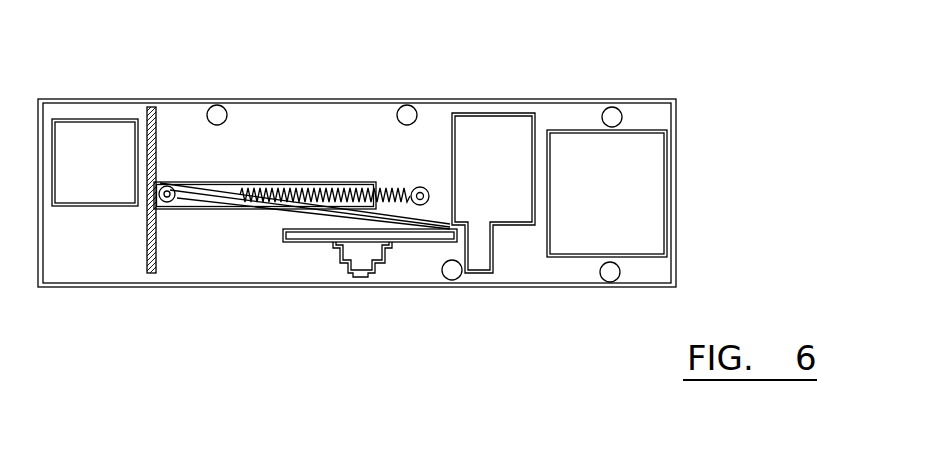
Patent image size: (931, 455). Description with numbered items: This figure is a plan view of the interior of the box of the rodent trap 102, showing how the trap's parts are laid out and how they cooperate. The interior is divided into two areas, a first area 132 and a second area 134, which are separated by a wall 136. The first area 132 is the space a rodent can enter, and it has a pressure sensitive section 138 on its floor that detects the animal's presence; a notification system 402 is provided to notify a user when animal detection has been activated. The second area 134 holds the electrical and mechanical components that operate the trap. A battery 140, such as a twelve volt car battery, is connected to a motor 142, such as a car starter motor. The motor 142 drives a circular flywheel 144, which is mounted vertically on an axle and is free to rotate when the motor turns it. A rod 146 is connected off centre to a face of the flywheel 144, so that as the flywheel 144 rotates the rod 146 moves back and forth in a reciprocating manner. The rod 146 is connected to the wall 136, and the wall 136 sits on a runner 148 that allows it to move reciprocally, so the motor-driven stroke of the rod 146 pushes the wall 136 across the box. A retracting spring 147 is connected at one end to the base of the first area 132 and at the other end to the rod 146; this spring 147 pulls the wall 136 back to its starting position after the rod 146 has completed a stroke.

The housing assembly 102 is at (690, 147).
The first area 132 is at (108, 253).
The second area 134 is at (236, 261).
The wall 136 is at (157, 258).
The pressure sensitive section 138 is at (113, 173).
The battery 140 is at (625, 203).
The motor 142 is at (510, 180).
The flywheel 144 is at (412, 237).
The rod 146 is at (192, 182).
The retracting spring 147 is at (340, 186).
The runner 148 is at (235, 184).
The notification system 402 is at (179, 5).